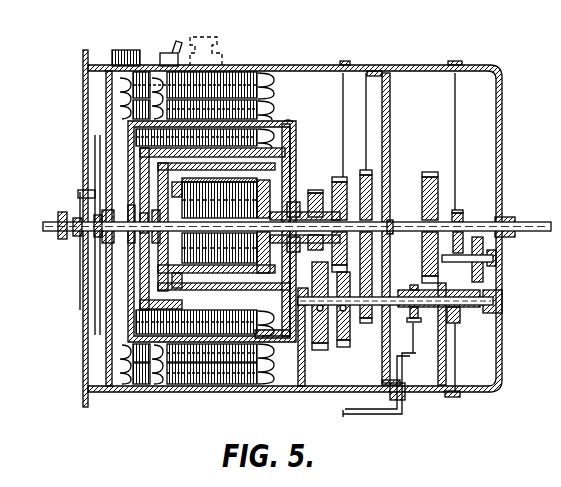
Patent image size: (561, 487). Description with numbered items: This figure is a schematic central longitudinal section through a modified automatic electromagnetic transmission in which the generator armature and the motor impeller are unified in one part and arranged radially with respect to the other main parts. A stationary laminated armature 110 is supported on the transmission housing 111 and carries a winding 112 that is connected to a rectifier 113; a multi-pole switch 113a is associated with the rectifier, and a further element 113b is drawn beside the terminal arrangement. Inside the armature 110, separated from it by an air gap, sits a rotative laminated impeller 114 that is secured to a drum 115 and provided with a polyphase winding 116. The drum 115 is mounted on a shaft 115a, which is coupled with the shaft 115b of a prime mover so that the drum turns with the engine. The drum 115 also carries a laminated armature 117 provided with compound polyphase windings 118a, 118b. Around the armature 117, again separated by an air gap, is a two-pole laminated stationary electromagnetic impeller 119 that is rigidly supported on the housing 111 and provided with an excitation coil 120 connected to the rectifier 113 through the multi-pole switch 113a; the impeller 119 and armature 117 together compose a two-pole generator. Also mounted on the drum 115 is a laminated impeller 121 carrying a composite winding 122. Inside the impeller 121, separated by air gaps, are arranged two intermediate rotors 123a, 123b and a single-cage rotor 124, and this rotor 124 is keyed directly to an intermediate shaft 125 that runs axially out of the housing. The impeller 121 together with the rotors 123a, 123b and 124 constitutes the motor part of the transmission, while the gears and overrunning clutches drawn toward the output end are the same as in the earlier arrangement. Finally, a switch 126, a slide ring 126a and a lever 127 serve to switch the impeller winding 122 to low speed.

The stationary laminated armature 110 is at (143, 386).
The transmission housing 111 is at (272, 390).
The winding 112 is at (128, 375).
The rectifier 113 is at (123, 86).
The multi-pole switch 113a is at (165, 53).
The terminal lead 113b is at (218, 57).
The rotative laminated impeller 114 is at (130, 120).
The drum 115 is at (128, 285).
The shaft 115a is at (82, 238).
The shaft of prime mover 115b is at (53, 219).
The polyphase winding 116 is at (127, 100).
The laminated armature 117 is at (273, 88).
The compound polyphase winding 118a is at (282, 120).
The compound polyphase winding 118b is at (268, 104).
The stationary electromagnetic impeller 119 is at (235, 77).
The excitation coil 120 is at (270, 82).
The laminated impeller 121 is at (276, 160).
The composite winding 122 is at (292, 137).
The intermediate rotor 123a is at (172, 315).
The intermediate rotor 123b is at (143, 300).
The single-cage rotor 124 is at (248, 208).
The intermediate shaft 125 is at (198, 222).
The switch 126 is at (108, 255).
The slide ring 126a is at (100, 245).
The lever 127 is at (84, 153).